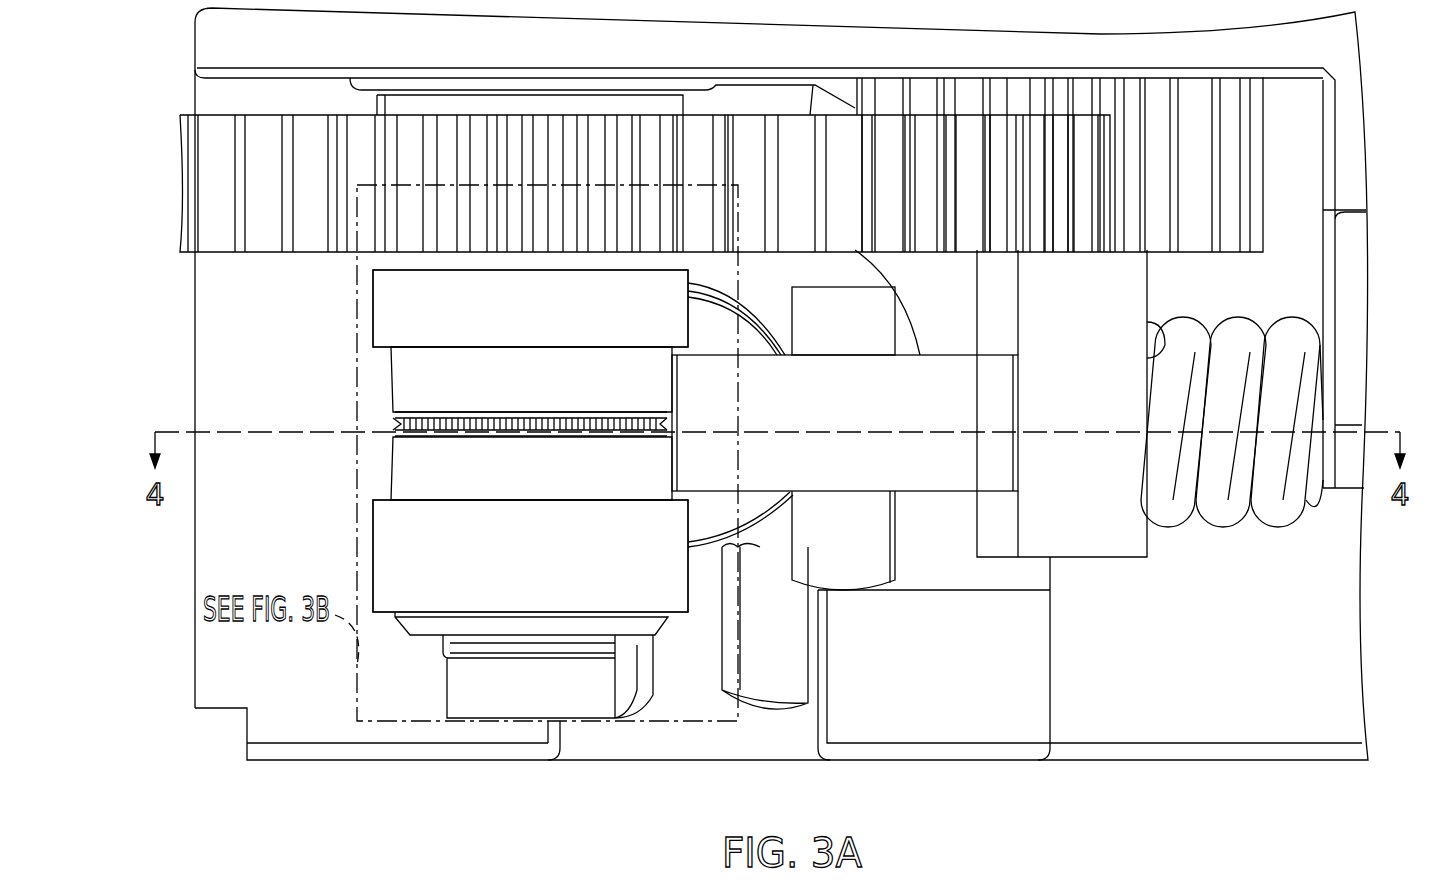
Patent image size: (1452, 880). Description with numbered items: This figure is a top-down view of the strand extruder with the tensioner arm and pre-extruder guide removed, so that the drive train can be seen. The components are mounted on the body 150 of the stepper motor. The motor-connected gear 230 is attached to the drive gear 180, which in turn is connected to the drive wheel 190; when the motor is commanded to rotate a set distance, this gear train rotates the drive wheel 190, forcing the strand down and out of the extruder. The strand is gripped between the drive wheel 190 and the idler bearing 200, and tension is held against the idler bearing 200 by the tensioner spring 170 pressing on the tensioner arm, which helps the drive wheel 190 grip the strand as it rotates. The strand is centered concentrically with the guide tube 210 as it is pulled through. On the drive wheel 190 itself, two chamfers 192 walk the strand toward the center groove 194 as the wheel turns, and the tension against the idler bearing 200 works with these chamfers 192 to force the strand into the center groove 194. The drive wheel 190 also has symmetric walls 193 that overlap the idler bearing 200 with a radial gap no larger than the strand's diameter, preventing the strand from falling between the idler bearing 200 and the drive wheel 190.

The body 150 is at (1370, 682).
The tensioner spring 170 is at (1305, 318).
The drive gear 180 is at (160, 216).
The drive wheel 190 is at (362, 297).
The chamfers 192 is at (385, 370).
The symmetric walls 193 is at (365, 318).
The center groove 194 is at (385, 413).
The idler bearing 200 is at (937, 350).
The guide tube 210 is at (736, 728).
The motor-connected gear 230 is at (1272, 148).